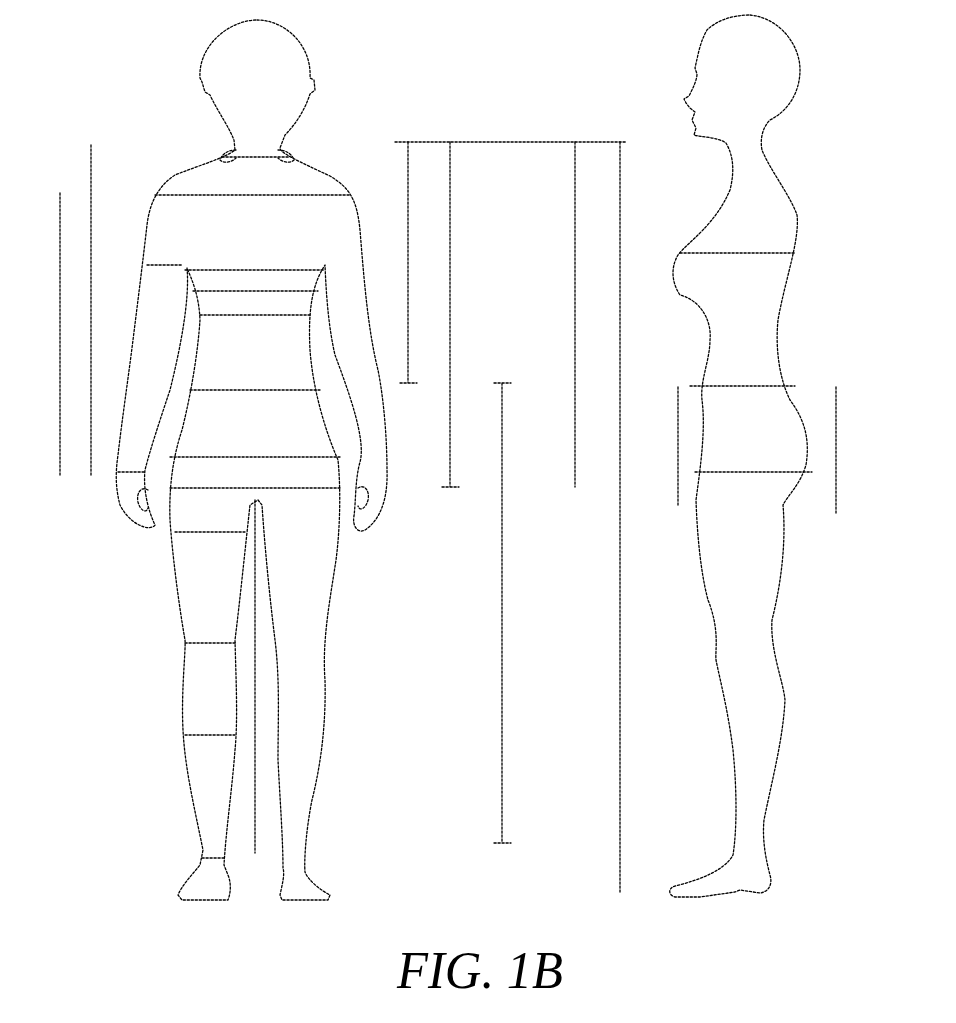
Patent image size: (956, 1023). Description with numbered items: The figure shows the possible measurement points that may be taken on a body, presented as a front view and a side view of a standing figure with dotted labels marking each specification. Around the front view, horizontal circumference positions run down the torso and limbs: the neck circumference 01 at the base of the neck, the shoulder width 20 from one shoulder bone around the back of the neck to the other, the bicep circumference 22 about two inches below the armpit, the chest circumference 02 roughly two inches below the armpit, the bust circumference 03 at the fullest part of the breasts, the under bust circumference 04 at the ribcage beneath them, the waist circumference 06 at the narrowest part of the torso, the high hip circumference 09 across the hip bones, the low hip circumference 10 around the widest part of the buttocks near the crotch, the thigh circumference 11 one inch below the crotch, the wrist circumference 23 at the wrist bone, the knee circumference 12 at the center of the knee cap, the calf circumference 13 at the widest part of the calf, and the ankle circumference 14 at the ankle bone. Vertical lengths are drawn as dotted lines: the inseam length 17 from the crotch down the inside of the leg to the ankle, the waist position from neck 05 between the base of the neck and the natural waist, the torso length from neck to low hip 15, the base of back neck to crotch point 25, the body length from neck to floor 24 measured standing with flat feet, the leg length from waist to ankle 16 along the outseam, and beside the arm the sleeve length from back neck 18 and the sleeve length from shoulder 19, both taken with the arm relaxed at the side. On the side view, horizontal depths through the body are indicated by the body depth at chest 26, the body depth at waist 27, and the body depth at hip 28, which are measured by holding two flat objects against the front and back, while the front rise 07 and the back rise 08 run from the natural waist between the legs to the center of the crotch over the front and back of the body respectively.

The neck circumference 01 is at (256, 157).
The shoulder width 20 is at (252, 196).
The bicep circumference 22 is at (164, 265).
The chest circumference 02 is at (255, 272).
The bust circumference 03 is at (255, 291).
The under bust circumference 04 is at (255, 315).
The waist circumference 06 is at (255, 391).
The high hip circumference 09 is at (255, 457).
The low hip circumference 10 is at (255, 487).
The thigh circumference 11 is at (210, 532).
The wrist circumference 23 is at (129, 472).
The knee circumference 12 is at (211, 643).
The inseam length 17 is at (254, 676).
The calf circumference 13 is at (210, 735).
The ankle circumference 14 is at (222, 858).
The waist position from neck 05 is at (408, 262).
The torso length from neck to low hip 15 is at (450, 314).
The base of back neck to crotch point 25 is at (574, 314).
The body length from neck to floor 24 is at (613, 517).
The leg length from waist to ankle (outseam) 16 is at (498, 613).
The sleeve length from back neck 18 is at (91, 310).
The sleeve length from shoulder 19 is at (60, 334).
The body depth at chest 26 is at (737, 253).
The body depth at waist 27 is at (742, 385).
The body depth at hip 28 is at (753, 472).
The front rise 07 is at (678, 446).
The back rise 08 is at (837, 450).